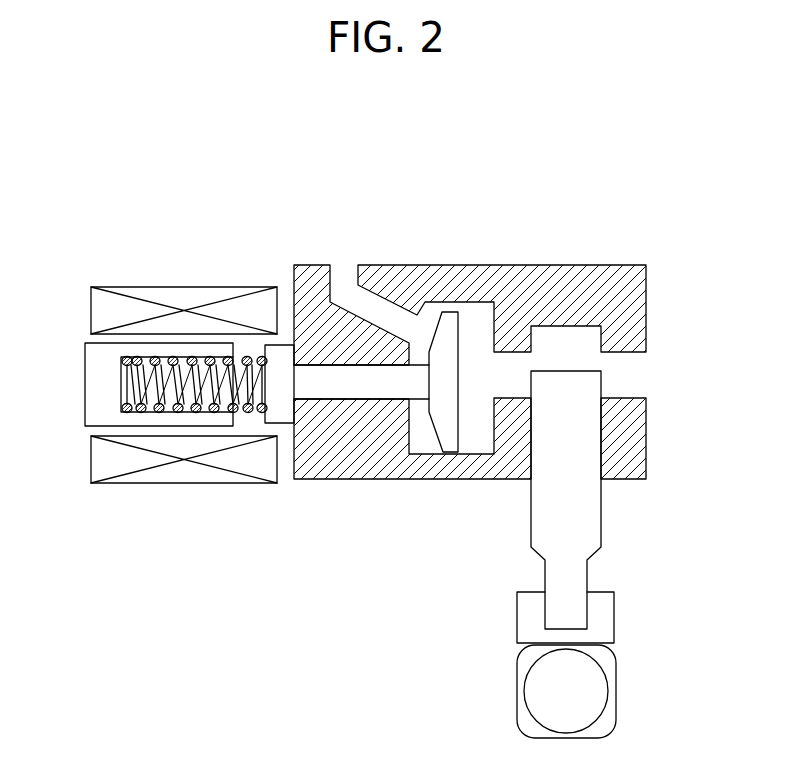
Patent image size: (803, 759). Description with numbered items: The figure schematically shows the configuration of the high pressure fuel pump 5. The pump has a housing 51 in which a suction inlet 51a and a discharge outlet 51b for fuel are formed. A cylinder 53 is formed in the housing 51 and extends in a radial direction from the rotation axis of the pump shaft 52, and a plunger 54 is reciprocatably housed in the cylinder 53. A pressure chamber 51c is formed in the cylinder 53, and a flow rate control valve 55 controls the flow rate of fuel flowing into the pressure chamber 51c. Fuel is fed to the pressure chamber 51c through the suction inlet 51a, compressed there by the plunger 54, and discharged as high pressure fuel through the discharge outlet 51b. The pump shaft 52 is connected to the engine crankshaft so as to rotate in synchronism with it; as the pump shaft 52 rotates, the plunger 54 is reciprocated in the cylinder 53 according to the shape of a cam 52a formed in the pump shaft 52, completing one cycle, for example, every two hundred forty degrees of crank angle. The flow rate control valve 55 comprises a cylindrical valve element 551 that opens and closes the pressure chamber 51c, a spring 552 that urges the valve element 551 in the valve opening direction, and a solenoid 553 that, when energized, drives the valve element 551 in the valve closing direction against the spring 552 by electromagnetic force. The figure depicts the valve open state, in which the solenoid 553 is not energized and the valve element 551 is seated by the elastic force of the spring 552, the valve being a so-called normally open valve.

The high pressure fuel pump 5 is at (503, 183).
The housing 51 is at (612, 265).
The suction inlet 51a is at (352, 256).
The discharge outlet 51b is at (660, 370).
The pressure chamber 51c is at (544, 362).
The pump shaft 52 is at (608, 688).
The cam 52a is at (517, 681).
The cylinder 53 is at (543, 462).
The plunger 54 is at (603, 533).
The flow rate control valve 55 is at (93, 228).
The valve element 551 is at (380, 390).
The spring 552 is at (122, 382).
The solenoid 553 is at (225, 287).